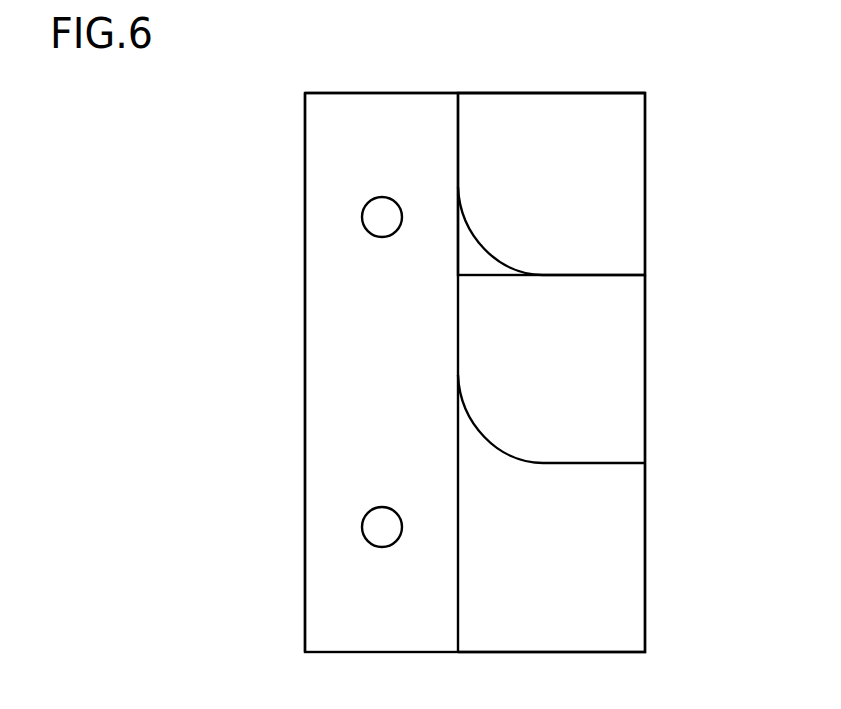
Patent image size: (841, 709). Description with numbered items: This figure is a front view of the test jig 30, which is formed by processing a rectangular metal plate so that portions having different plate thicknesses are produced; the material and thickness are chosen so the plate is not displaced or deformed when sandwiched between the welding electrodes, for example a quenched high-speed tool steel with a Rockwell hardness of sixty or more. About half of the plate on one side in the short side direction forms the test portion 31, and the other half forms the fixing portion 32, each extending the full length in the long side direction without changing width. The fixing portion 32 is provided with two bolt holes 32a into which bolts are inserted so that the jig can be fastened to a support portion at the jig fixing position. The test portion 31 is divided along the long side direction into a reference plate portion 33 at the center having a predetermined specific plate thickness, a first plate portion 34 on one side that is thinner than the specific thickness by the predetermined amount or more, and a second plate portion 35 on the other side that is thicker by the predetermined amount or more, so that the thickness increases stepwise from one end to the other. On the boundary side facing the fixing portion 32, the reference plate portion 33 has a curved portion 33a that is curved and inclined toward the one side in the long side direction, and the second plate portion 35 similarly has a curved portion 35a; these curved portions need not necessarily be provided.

The test jig 30 is at (182, 138).
The test portion 31 is at (619, 91).
The fixing portion 32 is at (332, 387).
The bolt holes 32a is at (362, 216).
The reference plate portion 33 is at (627, 378).
The curved portion 33a is at (483, 246).
The first plate portion 34 is at (627, 173).
The second plate portion 35 is at (627, 558).
The curved portion 35a is at (483, 434).